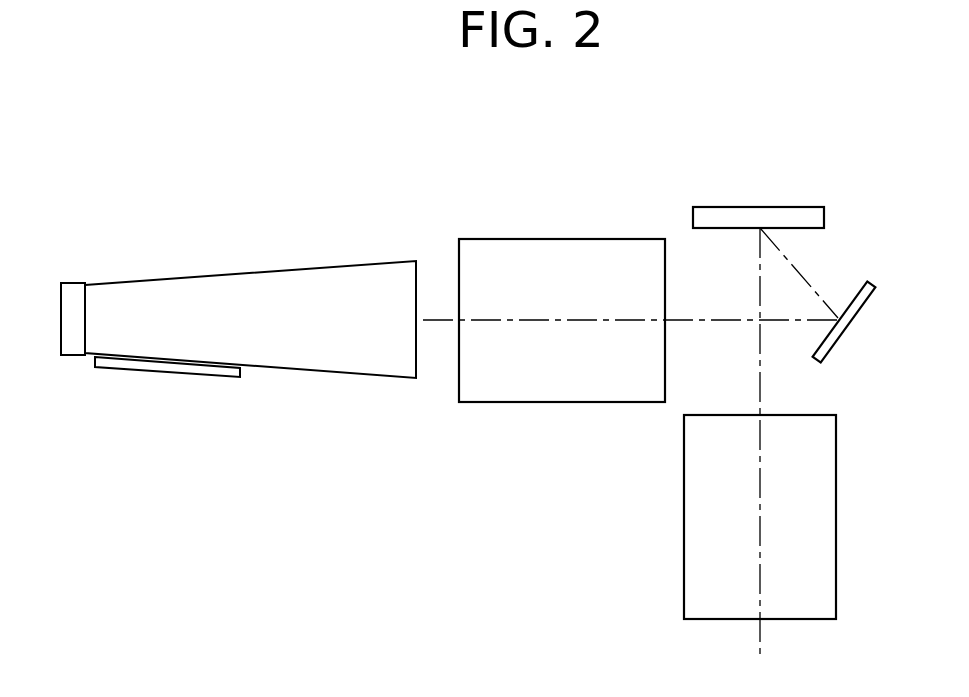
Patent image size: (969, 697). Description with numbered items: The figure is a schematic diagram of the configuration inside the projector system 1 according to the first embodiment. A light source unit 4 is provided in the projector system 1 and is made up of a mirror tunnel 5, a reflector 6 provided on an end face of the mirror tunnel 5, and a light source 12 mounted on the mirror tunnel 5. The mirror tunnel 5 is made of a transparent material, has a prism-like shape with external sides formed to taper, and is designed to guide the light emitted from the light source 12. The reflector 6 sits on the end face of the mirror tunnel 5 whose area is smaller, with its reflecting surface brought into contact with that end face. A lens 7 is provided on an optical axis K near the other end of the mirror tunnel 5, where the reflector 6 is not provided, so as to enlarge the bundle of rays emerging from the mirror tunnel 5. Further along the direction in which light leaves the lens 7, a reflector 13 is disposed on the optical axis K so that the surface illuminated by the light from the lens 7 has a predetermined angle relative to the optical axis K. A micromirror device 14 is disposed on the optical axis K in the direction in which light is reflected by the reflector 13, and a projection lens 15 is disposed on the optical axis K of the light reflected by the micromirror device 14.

The projector system 1 is at (688, 136).
The light source unit 4 is at (238, 226).
The mirror tunnel 5 is at (362, 262).
The reflector 6 is at (78, 283).
The lens 7 is at (620, 238).
The light source 12 is at (204, 378).
The reflector 13 is at (868, 283).
The micromirror device 14 is at (795, 207).
The projection lens 15 is at (836, 470).
The optical axis K is at (440, 323).